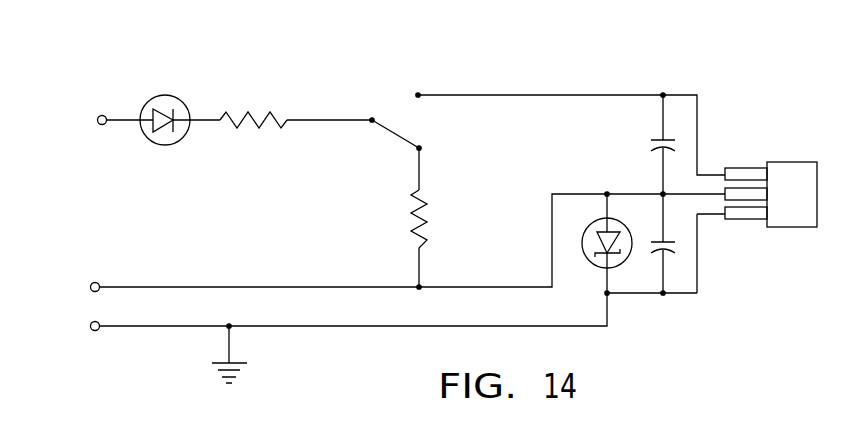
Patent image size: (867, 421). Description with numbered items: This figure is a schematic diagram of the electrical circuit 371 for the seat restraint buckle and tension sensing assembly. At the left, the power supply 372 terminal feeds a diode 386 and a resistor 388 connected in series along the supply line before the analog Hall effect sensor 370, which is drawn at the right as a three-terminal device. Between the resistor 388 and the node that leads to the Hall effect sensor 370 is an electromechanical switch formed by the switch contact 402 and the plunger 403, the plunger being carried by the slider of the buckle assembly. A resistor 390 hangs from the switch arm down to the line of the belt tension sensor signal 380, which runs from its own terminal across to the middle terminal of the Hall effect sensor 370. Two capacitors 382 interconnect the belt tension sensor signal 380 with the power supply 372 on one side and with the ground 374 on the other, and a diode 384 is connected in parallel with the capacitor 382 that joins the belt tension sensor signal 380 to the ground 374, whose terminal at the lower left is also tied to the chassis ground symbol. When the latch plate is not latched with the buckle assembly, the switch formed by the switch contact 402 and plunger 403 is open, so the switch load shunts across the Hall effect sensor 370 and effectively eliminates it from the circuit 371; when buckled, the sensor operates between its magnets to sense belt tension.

The electrical circuit 371 is at (83, 104).
The electrical power supply 372 is at (98, 125).
The ground 374 is at (90, 323).
The belt tension sensor signal 380 is at (97, 282).
The diode 386 is at (170, 113).
The resistor 388 is at (278, 118).
The resistor 390 is at (410, 193).
The switch contact 402 is at (418, 95).
The plunger 403 is at (388, 130).
The diode 384 is at (596, 250).
The capacitors 382 is at (677, 143).
The analog Hall effect sensor 370 is at (780, 163).